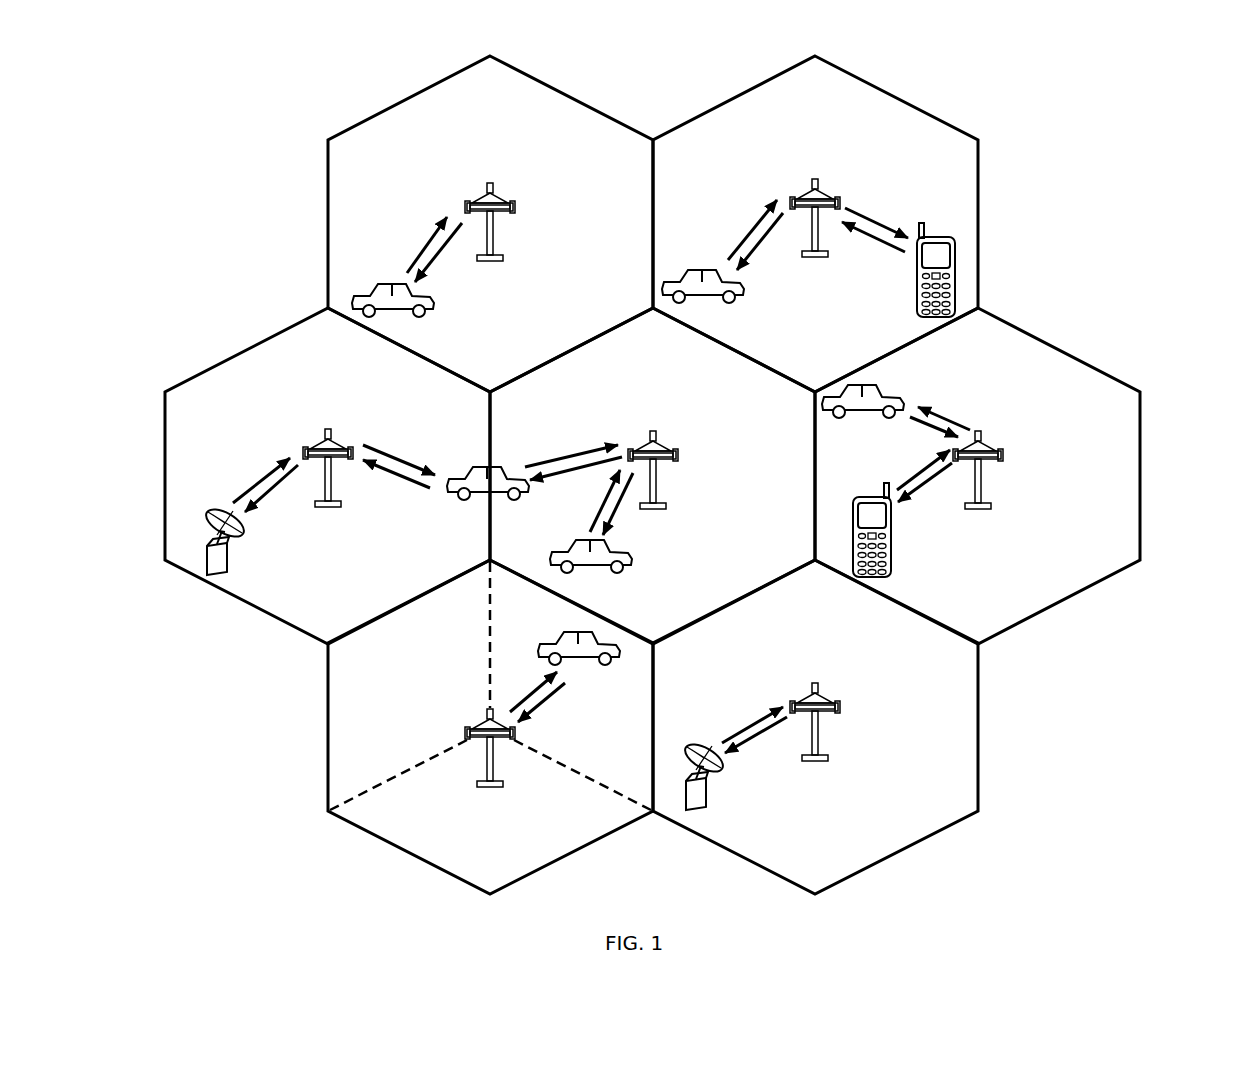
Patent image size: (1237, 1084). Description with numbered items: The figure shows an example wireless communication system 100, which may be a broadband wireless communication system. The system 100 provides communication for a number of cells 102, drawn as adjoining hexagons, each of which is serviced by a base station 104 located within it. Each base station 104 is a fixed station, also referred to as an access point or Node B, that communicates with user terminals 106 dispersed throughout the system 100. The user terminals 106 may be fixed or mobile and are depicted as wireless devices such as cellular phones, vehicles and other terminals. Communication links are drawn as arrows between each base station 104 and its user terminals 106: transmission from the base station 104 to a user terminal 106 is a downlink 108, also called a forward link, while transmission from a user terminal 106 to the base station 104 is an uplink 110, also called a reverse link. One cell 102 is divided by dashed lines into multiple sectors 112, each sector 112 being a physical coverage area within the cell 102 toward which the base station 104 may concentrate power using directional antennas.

The wireless communication system 100 is at (1126, 143).
The cell 102 is at (418, 92).
The base station 104 is at (490, 183).
The user terminal 106 is at (433, 312).
The downlink 108 is at (428, 256).
The uplink 110 is at (430, 252).
The sector 112 is at (550, 848).